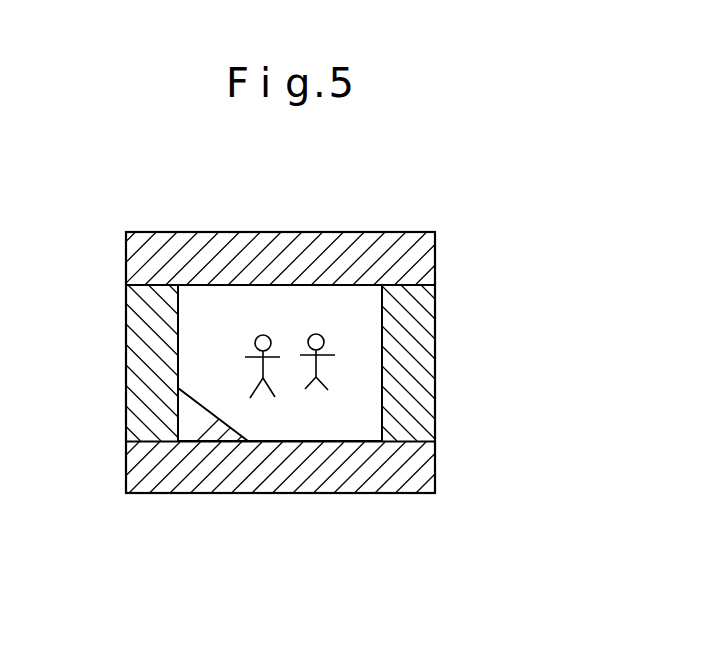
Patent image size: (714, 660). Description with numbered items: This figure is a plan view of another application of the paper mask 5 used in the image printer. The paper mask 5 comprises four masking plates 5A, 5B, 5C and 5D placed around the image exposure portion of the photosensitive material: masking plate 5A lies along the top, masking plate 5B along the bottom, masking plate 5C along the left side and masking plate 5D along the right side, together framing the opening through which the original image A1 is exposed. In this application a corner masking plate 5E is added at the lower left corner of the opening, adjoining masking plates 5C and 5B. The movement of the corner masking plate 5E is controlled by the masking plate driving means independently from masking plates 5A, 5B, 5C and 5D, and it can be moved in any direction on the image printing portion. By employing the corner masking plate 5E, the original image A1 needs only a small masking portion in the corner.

The paper mask portion 5 is at (448, 272).
The masking plate 5A is at (299, 245).
The masking plate 5B is at (338, 482).
The masking plate 5C is at (138, 378).
The masking plate 5D is at (415, 378).
The corner masking plate 5E is at (192, 432).
The original image A1 is at (325, 322).